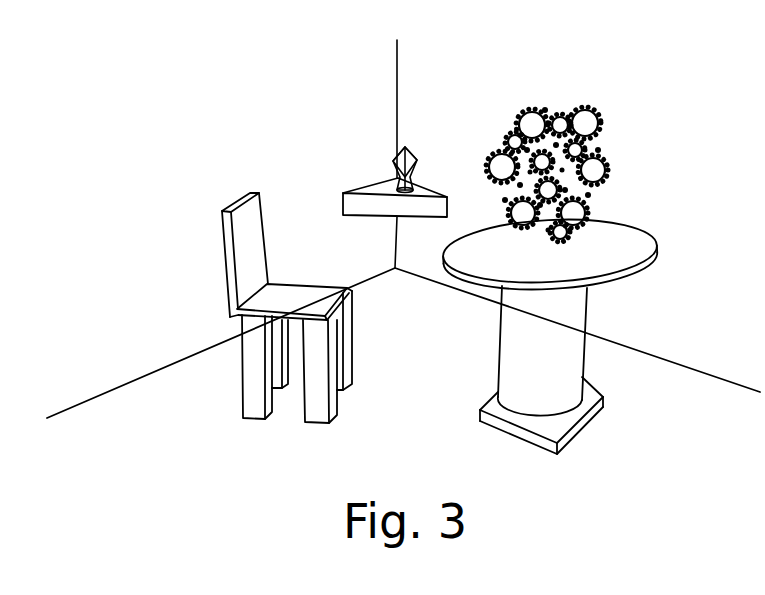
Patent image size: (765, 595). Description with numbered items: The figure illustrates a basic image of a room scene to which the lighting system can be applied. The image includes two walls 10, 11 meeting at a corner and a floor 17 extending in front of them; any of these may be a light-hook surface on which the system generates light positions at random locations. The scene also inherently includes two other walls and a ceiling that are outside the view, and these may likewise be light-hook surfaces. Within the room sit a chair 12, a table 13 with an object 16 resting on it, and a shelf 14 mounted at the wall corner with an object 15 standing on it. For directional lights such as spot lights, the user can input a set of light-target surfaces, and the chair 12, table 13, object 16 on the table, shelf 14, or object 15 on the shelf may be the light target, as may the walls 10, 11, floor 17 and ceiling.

The wall 10 is at (628, 87).
The wall 11 is at (298, 136).
The chair 12 is at (296, 297).
The table 13 is at (623, 246).
The shelf 14 is at (370, 192).
The lamp 15 is at (412, 160).
The plant 16 is at (535, 117).
The floor 17 is at (418, 453).